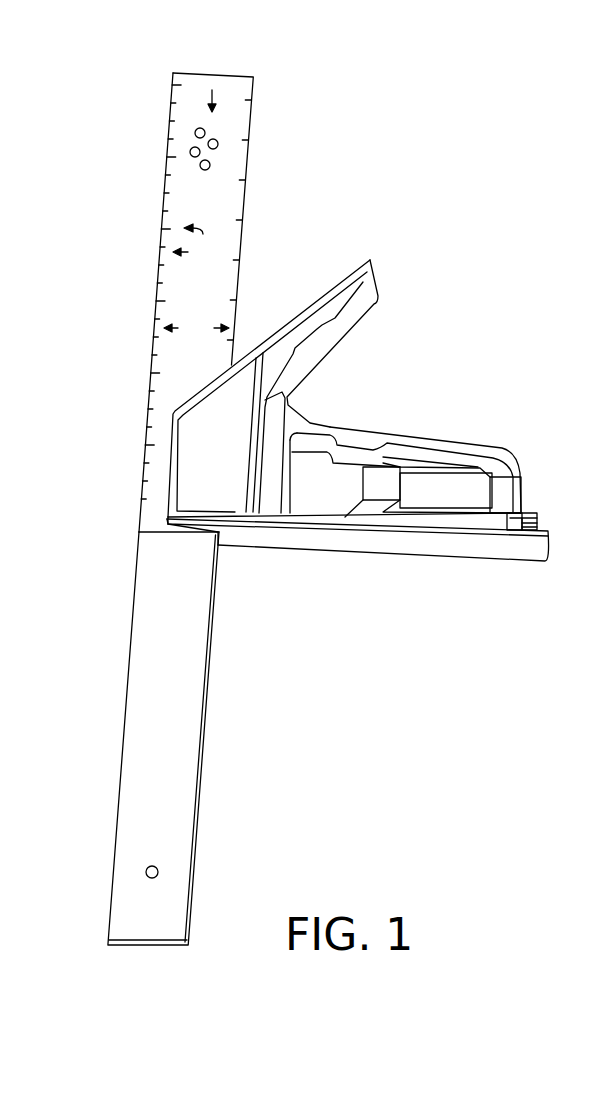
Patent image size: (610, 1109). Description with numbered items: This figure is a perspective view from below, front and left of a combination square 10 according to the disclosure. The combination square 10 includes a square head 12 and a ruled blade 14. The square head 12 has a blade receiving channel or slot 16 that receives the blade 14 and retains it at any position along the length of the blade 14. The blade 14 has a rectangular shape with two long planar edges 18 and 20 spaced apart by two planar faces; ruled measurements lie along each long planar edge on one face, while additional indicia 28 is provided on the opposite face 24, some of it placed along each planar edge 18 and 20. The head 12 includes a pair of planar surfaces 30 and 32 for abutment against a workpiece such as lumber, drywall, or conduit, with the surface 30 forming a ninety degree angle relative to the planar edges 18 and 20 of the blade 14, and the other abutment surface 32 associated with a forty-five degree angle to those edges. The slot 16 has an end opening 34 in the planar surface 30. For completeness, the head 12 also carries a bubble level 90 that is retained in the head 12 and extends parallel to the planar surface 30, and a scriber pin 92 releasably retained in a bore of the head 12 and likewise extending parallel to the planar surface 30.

The combination square 10 is at (403, 107).
The square head 12 is at (500, 440).
The ruled blade 14 is at (170, 95).
The blade receiving channel or slot 16 is at (162, 536).
The planar edge 18 is at (203, 727).
The planar edge 20 is at (122, 742).
The planar face 24 is at (140, 793).
The additional indicia 28 is at (197, 102).
The planar surface 30 is at (323, 540).
The planar surface 32 is at (350, 272).
The end opening 34 is at (190, 533).
The bubble level 90 is at (421, 468).
The scriber pin 92 is at (538, 512).